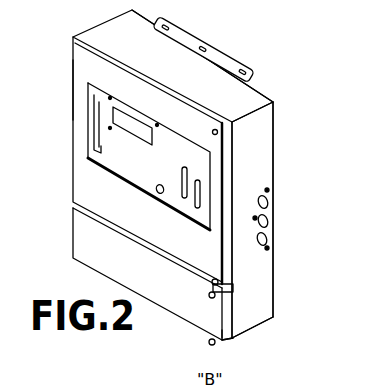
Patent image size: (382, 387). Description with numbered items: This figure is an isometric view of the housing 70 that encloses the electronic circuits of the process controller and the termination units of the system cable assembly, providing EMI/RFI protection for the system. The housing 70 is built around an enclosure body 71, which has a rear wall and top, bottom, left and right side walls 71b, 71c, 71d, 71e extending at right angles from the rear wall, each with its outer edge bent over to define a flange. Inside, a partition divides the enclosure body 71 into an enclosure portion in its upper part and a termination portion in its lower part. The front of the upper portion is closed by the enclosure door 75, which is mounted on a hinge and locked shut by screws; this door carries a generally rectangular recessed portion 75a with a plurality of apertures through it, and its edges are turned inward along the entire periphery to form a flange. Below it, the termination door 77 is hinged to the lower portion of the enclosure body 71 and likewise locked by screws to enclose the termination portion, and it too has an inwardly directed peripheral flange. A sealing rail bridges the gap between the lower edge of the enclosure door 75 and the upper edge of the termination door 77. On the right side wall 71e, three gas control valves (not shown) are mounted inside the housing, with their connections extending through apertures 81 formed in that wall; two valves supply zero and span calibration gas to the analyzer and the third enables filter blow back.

The housing 70 is at (97, 33).
The enclosure body 71 is at (275, 280).
The top side wall 71b is at (251, 101).
The bottom side wall 71c is at (262, 323).
The left side wall 71d is at (115, 18).
The right side wall 71e is at (272, 152).
The enclosure door 75 is at (84, 192).
The recessed portion 75a is at (79, 96).
The termination door 77 is at (83, 244).
The apertures 81 is at (268, 203).